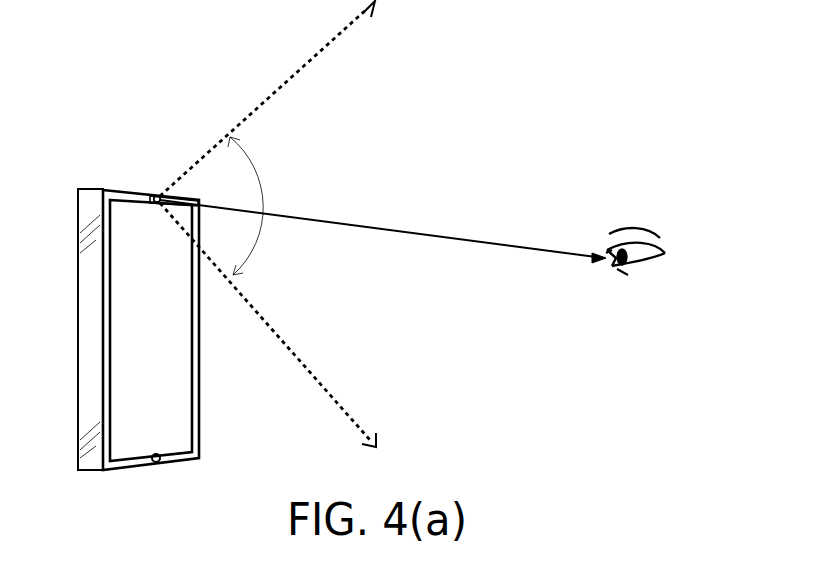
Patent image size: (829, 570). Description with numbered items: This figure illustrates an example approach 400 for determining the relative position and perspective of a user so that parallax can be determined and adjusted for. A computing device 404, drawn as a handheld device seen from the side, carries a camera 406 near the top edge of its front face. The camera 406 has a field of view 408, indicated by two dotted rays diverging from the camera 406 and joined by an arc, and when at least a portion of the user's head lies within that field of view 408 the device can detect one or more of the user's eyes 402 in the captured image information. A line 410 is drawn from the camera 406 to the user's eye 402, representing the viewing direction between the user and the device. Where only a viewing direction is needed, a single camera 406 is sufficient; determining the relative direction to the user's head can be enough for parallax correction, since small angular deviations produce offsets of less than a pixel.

The system environment 400 is at (775, 142).
The user's eyes 402 is at (684, 244).
The computing device 404 is at (122, 189).
The camera 406 is at (157, 195).
The field of view 408 is at (240, 128).
The line of sight 410 is at (450, 237).